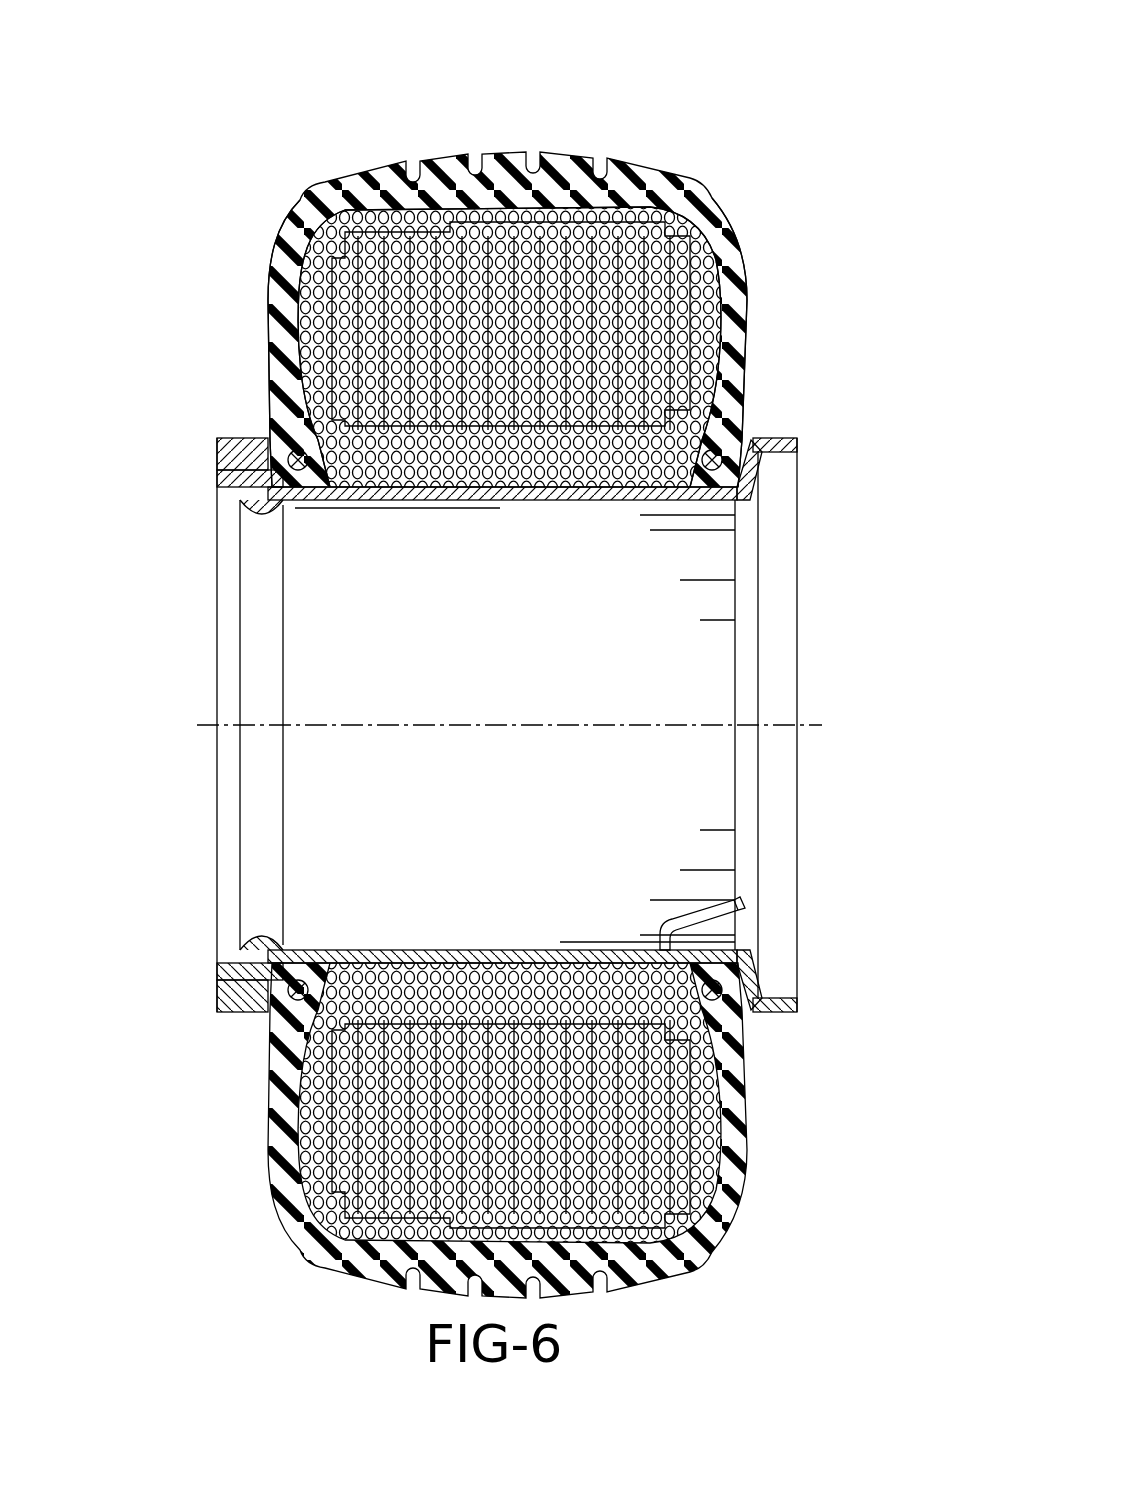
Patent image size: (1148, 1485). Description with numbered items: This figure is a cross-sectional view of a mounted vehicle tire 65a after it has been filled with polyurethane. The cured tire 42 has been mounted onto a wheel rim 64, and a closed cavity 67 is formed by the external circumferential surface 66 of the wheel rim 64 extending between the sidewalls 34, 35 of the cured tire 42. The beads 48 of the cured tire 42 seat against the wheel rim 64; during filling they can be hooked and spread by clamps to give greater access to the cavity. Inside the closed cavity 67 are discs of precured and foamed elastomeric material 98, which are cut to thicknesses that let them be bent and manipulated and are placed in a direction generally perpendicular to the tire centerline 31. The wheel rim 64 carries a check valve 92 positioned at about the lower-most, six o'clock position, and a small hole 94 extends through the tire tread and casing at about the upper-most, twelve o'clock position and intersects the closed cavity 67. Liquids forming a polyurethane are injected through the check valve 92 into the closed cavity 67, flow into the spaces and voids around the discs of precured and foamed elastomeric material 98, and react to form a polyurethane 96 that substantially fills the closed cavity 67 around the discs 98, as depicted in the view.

The vehicle tire 65a is at (190, 125).
The cured tire 42 is at (333, 178).
The hole 94 is at (635, 225).
The polyurethane 96 is at (428, 220).
The discs of precured and foamed elastomeric material 98 is at (586, 233).
The closed cavity 67 is at (322, 252).
The sidewall 35 is at (270, 352).
The sidewall 34 is at (747, 352).
The beads 48 is at (270, 440).
The wheel rim 64 is at (220, 487).
The external circumferential surface 66 is at (405, 490).
The tire centerline 31 is at (488, 725).
The check valve 92 is at (705, 910).